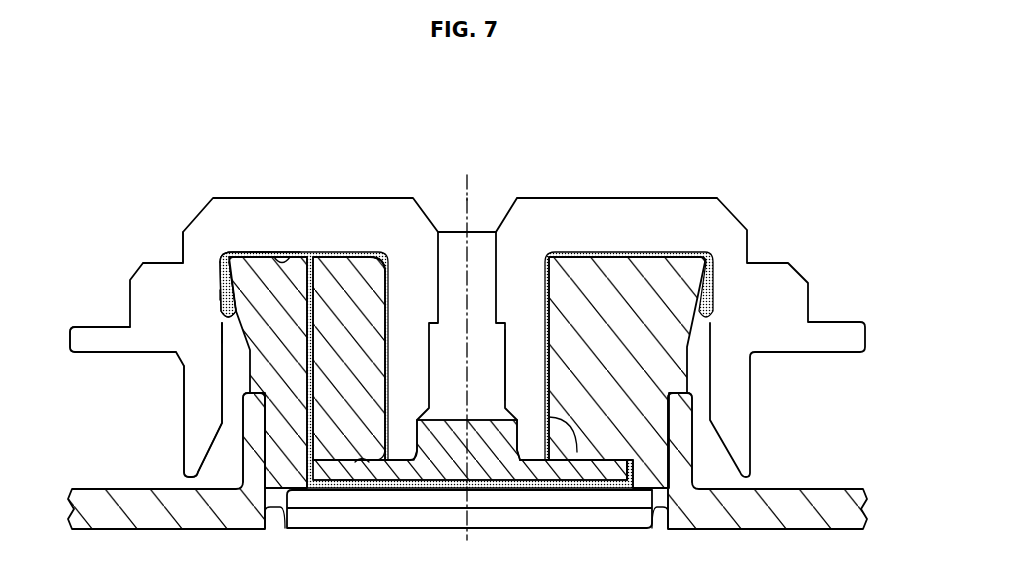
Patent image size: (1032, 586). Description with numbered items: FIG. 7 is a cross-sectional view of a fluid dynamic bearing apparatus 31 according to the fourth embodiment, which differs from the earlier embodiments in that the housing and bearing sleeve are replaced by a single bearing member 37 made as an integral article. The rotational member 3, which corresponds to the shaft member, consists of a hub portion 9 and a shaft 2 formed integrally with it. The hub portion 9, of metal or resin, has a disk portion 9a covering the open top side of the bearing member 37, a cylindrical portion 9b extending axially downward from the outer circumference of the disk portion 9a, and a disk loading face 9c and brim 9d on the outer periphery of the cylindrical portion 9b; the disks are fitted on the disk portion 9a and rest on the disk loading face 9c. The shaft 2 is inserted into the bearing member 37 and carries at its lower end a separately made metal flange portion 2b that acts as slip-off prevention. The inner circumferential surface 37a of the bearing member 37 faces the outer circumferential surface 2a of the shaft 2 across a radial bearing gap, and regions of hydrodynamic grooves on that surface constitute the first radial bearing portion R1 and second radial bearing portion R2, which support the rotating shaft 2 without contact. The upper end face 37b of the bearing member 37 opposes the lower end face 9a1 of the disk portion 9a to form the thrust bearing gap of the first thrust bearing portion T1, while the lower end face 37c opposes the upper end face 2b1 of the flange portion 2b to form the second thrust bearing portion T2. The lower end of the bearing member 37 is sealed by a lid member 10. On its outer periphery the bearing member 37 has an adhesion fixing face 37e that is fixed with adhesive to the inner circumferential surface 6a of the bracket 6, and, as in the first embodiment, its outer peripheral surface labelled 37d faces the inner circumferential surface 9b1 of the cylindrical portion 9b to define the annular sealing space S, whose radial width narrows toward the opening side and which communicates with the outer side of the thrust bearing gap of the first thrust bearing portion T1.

The shaft 2 is at (543, 329).
The outer circumferential surface of the shaft 2a is at (578, 478).
The flange portion 2b is at (552, 478).
The upper end face of the flange portion 2b1 is at (351, 468).
The rotational member 3 is at (291, 190).
The bracket 6 is at (158, 523).
The inner circumferential surface of the bracket 6a is at (278, 530).
The hub portion 9 is at (666, 194).
The disk portion 9a is at (592, 196).
The lower end face of the disk portion 9a1 is at (297, 254).
The cylindrical portion 9b is at (196, 398).
The inner circumferential surface of the cylindrical portion 9b1 is at (221, 332).
The disk loading face 9c is at (165, 262).
The brim 9d is at (88, 333).
The lid member 10 is at (451, 498).
The fluid dynamic bearing apparatus 31 is at (553, 138).
The bearing member 37 is at (665, 318).
The inner circumferential surface of the bearing member 37a is at (540, 384).
The end face of the bearing member 37b is at (245, 251).
The end face of the bearing member 37c is at (333, 468).
The resin side wall 37d is at (223, 368).
The adhesion fixing face 37e is at (260, 492).
The first radial bearing portion R1 is at (365, 314).
The second radial bearing portion R2 is at (364, 412).
The sealing space S is at (215, 296).
The first thrust bearing portion T1 is at (258, 245).
The second thrust bearing portion T2 is at (346, 472).